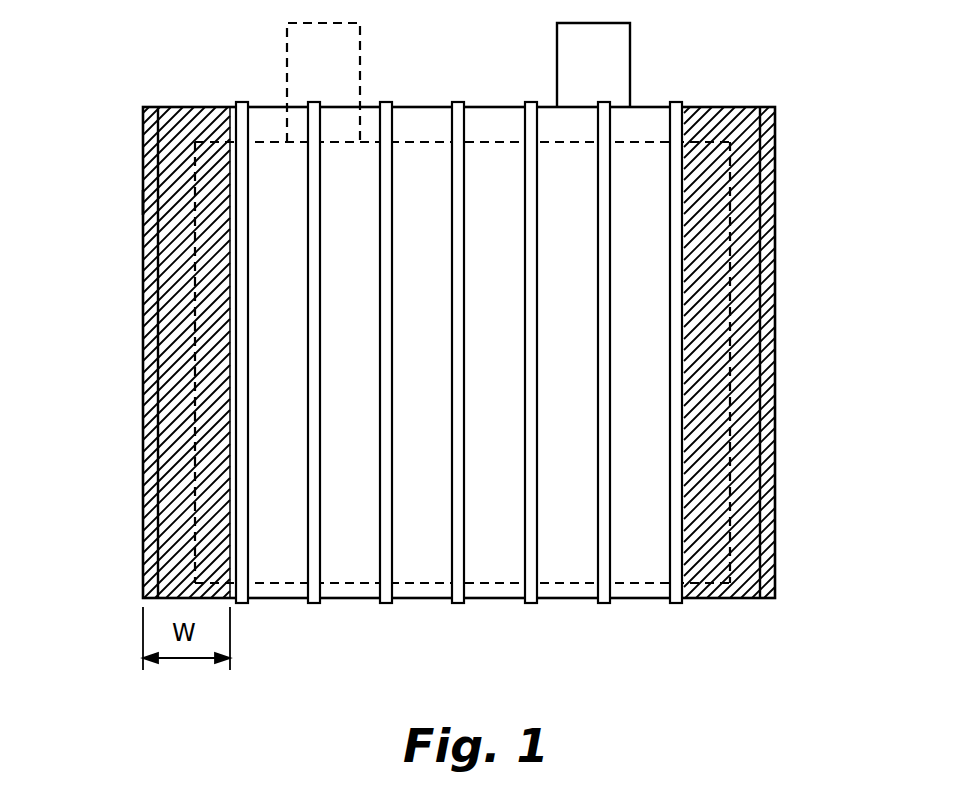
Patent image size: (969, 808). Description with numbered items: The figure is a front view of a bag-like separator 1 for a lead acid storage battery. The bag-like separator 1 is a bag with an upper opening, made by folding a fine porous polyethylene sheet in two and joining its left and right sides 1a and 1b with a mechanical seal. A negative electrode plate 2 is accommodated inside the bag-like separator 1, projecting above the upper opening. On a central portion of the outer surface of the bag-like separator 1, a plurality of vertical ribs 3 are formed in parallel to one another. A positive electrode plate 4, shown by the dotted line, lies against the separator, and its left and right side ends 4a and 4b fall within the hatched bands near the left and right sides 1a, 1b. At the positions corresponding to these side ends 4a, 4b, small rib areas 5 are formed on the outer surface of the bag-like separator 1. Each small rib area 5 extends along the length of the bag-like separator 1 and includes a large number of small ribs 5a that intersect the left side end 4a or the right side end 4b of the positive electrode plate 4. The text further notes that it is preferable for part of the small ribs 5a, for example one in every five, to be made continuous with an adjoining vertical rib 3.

The bag-like separator 1 is at (722, 90).
The left side 1a is at (143, 302).
The right side 1b is at (775, 218).
The negative electrode plate 2 is at (612, 40).
The vertical ribs 3 is at (452, 130).
The positive electrode plate 4 is at (340, 45).
The left side end 4a is at (190, 388).
The right side end 4b is at (730, 388).
The small rib areas 5 is at (143, 130).
The small ribs 5a is at (143, 203).